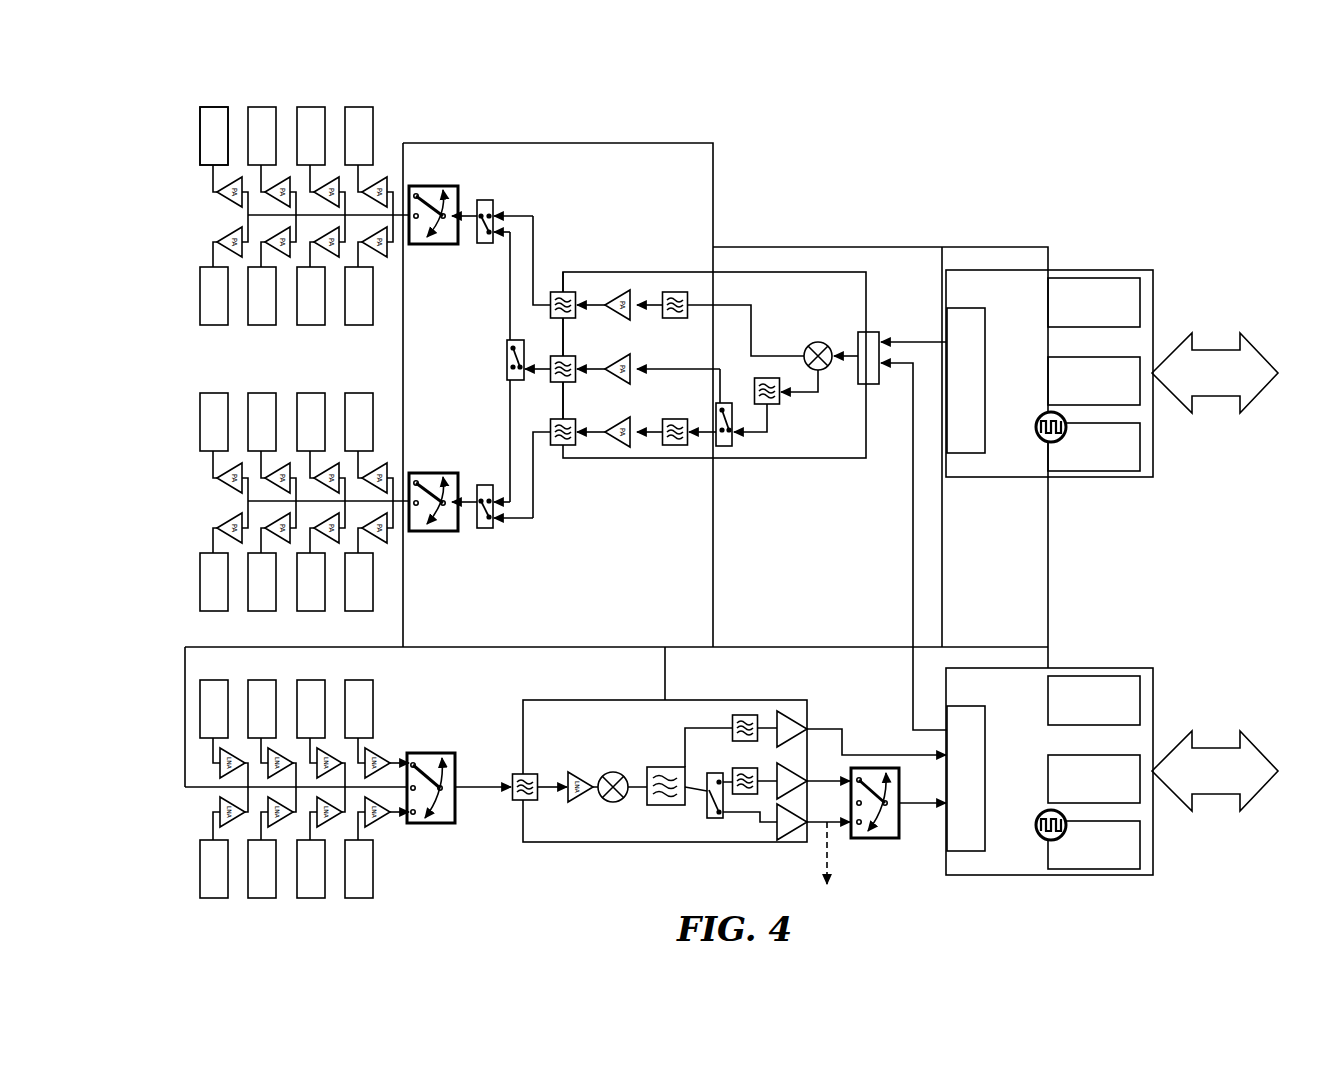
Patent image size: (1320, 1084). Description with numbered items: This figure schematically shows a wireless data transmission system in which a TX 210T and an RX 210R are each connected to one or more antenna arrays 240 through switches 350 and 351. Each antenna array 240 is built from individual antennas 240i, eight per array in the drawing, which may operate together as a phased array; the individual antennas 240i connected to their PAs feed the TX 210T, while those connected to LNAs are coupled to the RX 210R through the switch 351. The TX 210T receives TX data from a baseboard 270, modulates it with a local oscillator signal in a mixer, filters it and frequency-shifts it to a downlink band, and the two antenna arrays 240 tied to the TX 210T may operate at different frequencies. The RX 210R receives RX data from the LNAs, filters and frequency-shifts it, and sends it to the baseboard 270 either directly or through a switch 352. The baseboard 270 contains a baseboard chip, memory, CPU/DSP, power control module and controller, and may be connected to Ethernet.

The individual antenna 240i is at (299, 107).
The antenna array 240 is at (196, 229).
The switch 351 is at (434, 186).
The switch 350 is at (485, 245).
The TX 210T is at (612, 272).
The baseboard 270 is at (1113, 270).
The RX 210R is at (612, 842).
The switch 352 is at (885, 838).